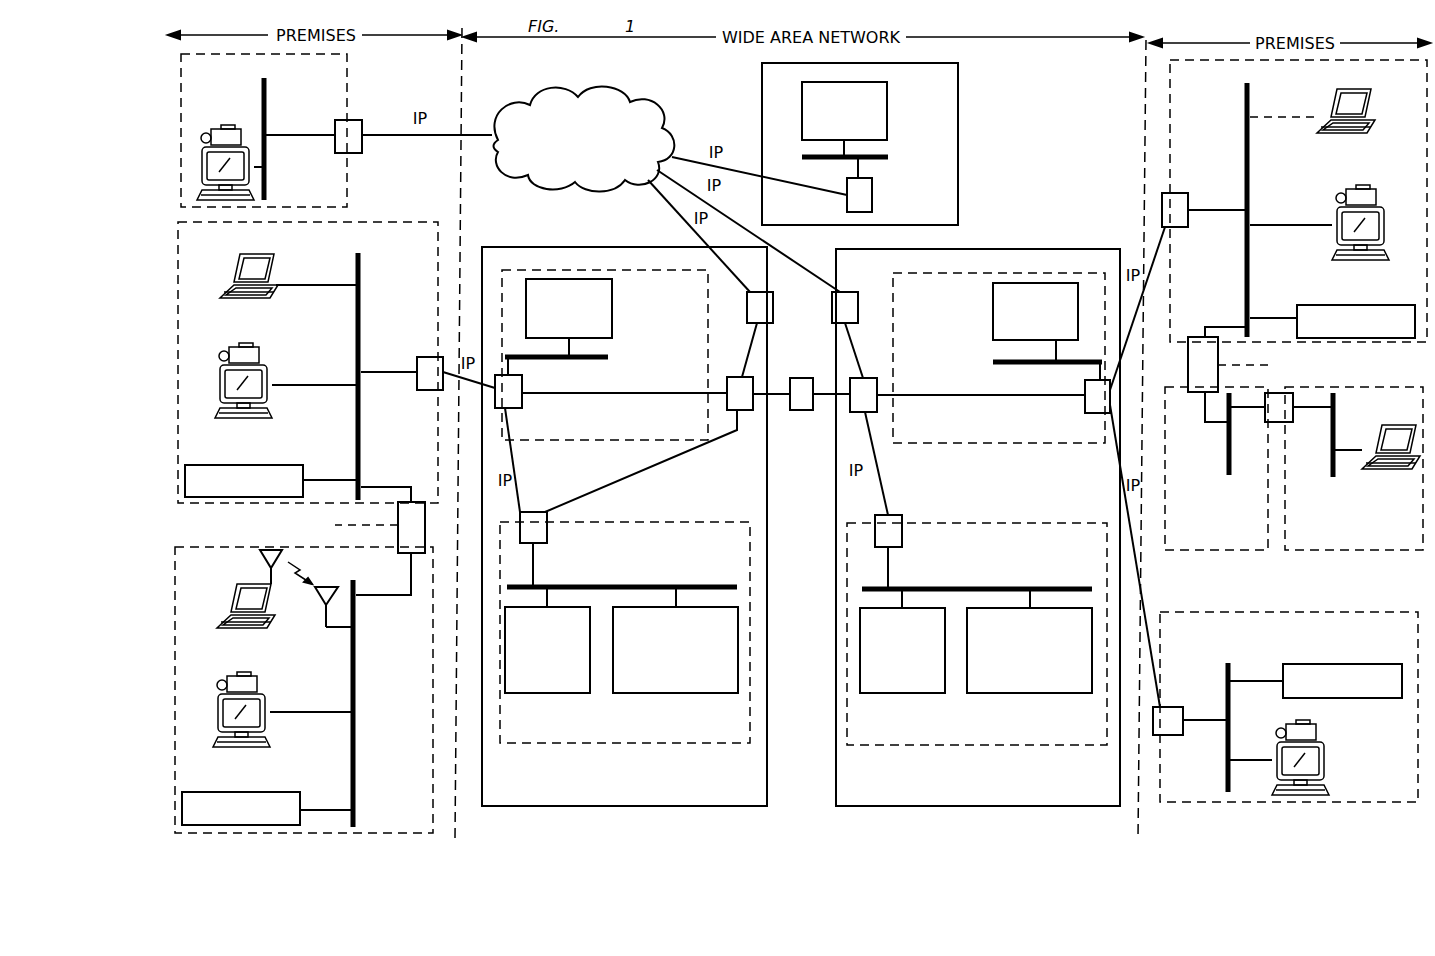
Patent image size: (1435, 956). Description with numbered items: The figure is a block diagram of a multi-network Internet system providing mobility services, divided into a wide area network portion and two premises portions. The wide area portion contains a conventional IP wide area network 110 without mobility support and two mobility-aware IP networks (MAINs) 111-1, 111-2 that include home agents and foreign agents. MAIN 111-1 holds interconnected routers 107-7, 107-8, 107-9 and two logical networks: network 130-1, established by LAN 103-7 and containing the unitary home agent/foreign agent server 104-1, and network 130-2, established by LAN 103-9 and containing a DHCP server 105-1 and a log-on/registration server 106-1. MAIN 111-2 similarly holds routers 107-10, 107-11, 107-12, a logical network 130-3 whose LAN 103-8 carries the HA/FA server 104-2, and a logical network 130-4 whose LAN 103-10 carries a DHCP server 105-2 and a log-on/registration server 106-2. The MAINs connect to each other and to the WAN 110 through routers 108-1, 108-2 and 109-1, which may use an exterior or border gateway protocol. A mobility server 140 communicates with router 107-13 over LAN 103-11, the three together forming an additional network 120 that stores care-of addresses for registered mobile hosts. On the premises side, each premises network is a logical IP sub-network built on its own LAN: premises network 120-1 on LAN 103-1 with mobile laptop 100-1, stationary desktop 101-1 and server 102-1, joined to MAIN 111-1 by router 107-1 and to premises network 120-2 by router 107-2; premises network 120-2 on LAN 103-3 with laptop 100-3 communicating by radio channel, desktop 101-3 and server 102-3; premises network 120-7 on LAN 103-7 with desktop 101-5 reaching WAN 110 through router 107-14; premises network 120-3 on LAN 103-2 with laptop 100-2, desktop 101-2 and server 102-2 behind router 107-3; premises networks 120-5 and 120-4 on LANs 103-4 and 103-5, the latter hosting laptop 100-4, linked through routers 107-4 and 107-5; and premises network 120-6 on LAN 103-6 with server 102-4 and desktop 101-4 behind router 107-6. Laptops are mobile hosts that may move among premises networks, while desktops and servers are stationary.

The laptop computer (mobile host) 100-1 is at (262, 256).
The laptop computer (mobile host) 100-2 is at (1360, 92).
The laptop computer (mobile host) 100-3 is at (230, 587).
The laptop computer (mobile host) 100-4 is at (1374, 430).
The desktop computer (stationary host) 101-1 is at (270, 350).
The desktop computer (stationary host) 101-2 is at (1342, 210).
The desktop computer (stationary host) 101-3 is at (270, 680).
The desktop computer (stationary host) 101-4 is at (1334, 746).
The desktop computer (stationary host) 101-5 is at (228, 130).
The server (stationary host) 102-1 is at (303, 468).
The server (stationary host) 102-2 is at (1300, 305).
The server (stationary host) 102-3 is at (300, 795).
The server (stationary host) 102-4 is at (1345, 664).
The local area network 103-1 is at (361, 258).
The local area network 103-2 is at (1244, 104).
The local area network 103-3 is at (356, 605).
The local area network 103-4 is at (1227, 438).
The local area network 103-5 is at (1333, 478).
The local area network 103-6 is at (1225, 688).
The local area network 103-7 is at (266, 190).
The local area network 103-8 is at (993, 360).
The local area network 103-9 is at (610, 587).
The local area network 103-10 is at (965, 589).
The local area network 103-11 is at (890, 158).
The home agent/foreign agent server 104-1 is at (612, 310).
The home agent/foreign agent server 104-2 is at (993, 312).
The DHCP server 105-1 is at (543, 693).
The DHCP server 105-2 is at (898, 693).
The log-on/registration server 106-1 is at (673, 693).
The log-on/registration server 106-2 is at (1027, 693).
The router 107-1 is at (418, 392).
The router 107-2 is at (415, 500).
The router 107-3 is at (1178, 193).
The router 107-4 is at (1198, 337).
The router 107-5 is at (1282, 393).
The router 107-6 is at (1170, 736).
The router 107-7 is at (522, 405).
The router 107-8 is at (547, 535).
The router 107-9 is at (743, 412).
The router 107-10 is at (850, 412).
The router 107-11 is at (1085, 410).
The router 107-12 is at (902, 537).
The router 107-13 is at (872, 196).
The router 107-14 is at (335, 122).
The router (exterior gateway) 108-1 is at (773, 310).
The router (exterior gateway) 108-2 is at (846, 292).
The router (border) 109-1 is at (800, 378).
The IP wide area network 110 is at (585, 88).
The mobility-aware IP network 111-1 is at (595, 247).
The mobility-aware IP network 111-2 is at (1024, 249).
The additional network 120 is at (762, 113).
The premises network 120-1 is at (398, 222).
The premises network 120-2 is at (232, 547).
The premises network 120-3 is at (1170, 93).
The premises network 120-4 is at (1345, 550).
The premises network 120-5 is at (1232, 550).
The premises network 120-6 is at (1232, 612).
The premises network 120-7 is at (347, 62).
The logical network 130-1 is at (585, 440).
The logical network 130-2 is at (697, 522).
The logical network 130-3 is at (970, 443).
The logical network 130-4 is at (1065, 523).
The mobility server 140 is at (887, 100).